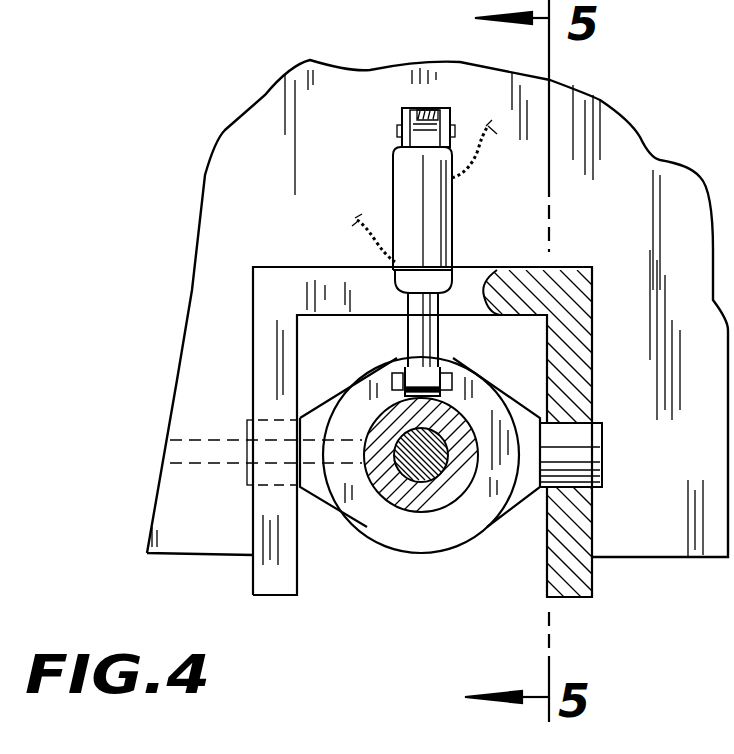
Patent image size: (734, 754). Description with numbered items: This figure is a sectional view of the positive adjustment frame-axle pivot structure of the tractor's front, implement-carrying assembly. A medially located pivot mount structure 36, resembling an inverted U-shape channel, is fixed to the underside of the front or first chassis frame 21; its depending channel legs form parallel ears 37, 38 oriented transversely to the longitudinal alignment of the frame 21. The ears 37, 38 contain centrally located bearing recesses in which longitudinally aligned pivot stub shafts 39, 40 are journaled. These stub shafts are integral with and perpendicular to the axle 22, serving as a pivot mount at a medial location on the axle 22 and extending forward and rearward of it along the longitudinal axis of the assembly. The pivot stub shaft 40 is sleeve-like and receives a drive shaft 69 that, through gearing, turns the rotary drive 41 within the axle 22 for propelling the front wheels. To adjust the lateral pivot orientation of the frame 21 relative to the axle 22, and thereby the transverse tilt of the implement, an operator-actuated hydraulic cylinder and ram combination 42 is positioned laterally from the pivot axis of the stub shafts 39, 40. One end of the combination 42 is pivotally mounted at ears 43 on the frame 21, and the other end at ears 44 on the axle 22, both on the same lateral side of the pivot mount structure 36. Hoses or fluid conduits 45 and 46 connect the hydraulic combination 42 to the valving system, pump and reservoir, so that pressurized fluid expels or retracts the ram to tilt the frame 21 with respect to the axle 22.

The first chassis frame 21 is at (268, 184).
The axle 22 is at (475, 510).
The pivot mount structure 36 is at (560, 270).
The ear 37 is at (570, 580).
The ear 38 is at (275, 580).
The pivot stub shaft 39 is at (580, 460).
The pivot stub shaft 40 is at (243, 432).
The rotary drive 41 is at (413, 480).
The hydraulic cylinder and ram combination 42 is at (417, 177).
The ears 43 is at (423, 108).
The ears 44 is at (403, 360).
The hose or fluid conduit 45 is at (482, 138).
The hose or fluid conduit 46 is at (363, 240).
The drive shaft 69 is at (215, 455).